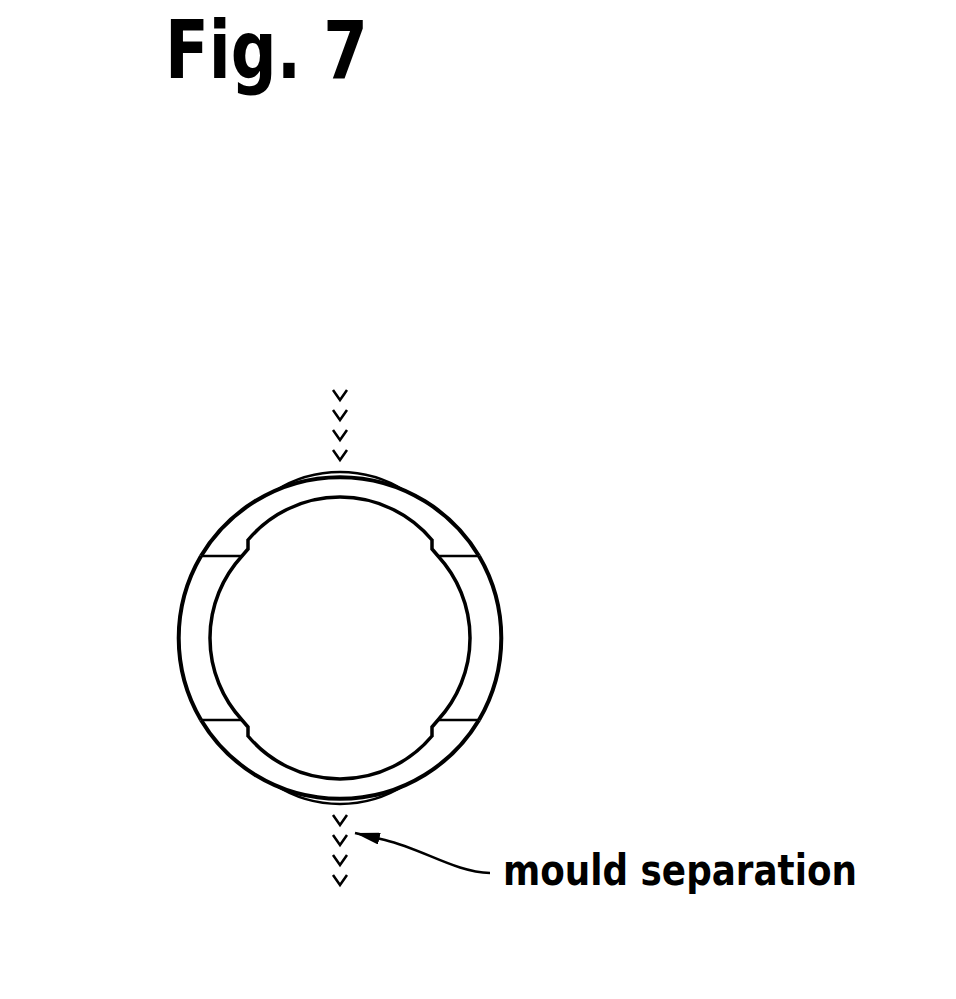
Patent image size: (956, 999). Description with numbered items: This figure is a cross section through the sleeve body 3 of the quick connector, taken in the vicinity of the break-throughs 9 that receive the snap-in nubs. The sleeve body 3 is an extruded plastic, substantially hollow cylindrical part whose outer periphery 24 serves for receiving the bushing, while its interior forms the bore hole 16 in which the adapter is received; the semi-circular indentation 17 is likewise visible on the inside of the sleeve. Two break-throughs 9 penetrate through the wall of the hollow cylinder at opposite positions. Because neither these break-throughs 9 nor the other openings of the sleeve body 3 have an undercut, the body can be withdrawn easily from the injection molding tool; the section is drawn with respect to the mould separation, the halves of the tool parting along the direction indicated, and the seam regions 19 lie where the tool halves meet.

The sleeve body 3 is at (265, 393).
The break-throughs 9 is at (198, 592).
The bore hole 16 is at (223, 713).
The semi-circular indentation 17 is at (393, 762).
The mould separation seam / flash 19 is at (358, 467).
The outer periphery 24 is at (473, 553).